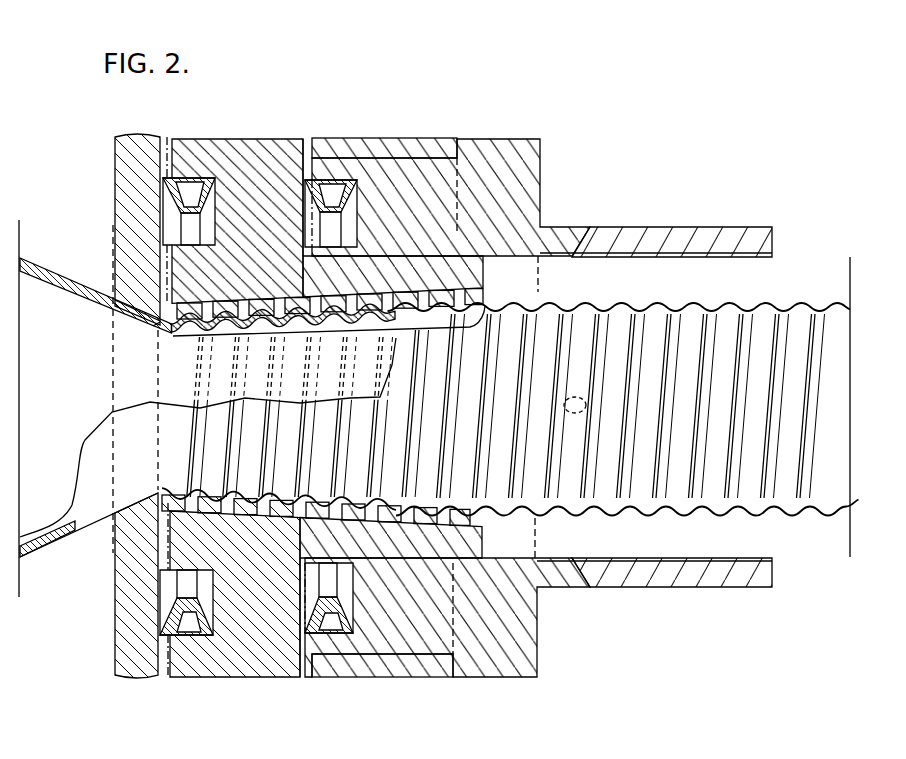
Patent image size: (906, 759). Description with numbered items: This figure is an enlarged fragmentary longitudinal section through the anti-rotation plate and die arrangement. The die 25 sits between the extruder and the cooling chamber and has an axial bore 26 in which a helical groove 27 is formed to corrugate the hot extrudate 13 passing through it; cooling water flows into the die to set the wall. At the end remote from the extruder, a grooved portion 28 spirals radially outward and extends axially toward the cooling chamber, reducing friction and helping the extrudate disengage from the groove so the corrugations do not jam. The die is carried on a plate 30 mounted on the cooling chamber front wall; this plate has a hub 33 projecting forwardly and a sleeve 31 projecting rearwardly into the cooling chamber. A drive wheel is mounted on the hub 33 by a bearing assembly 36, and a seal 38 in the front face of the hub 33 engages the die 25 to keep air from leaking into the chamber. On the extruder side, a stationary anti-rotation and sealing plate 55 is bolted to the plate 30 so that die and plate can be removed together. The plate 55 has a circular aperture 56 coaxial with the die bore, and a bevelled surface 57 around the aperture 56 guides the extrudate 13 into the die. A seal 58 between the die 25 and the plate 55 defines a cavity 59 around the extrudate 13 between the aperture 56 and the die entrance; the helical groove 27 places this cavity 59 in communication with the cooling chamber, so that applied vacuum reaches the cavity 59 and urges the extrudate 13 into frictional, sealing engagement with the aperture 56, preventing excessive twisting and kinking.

The extrudate 13 is at (627, 305).
The die 25 is at (250, 147).
The axial bore 26 is at (225, 339).
The helical groove 27 is at (290, 292).
The grooved portion 28 is at (350, 341).
The plate 30 is at (510, 148).
The sleeve 31 is at (695, 227).
The hub 33 is at (413, 168).
The bearing assembly 36 is at (372, 139).
The seal 38 is at (330, 615).
The anti-rotation and sealing plate 55 is at (128, 178).
The circular aperture 56 is at (153, 330).
The bevelled surface 57 is at (128, 287).
The seal 58 is at (173, 200).
The cavity 59 is at (165, 533).